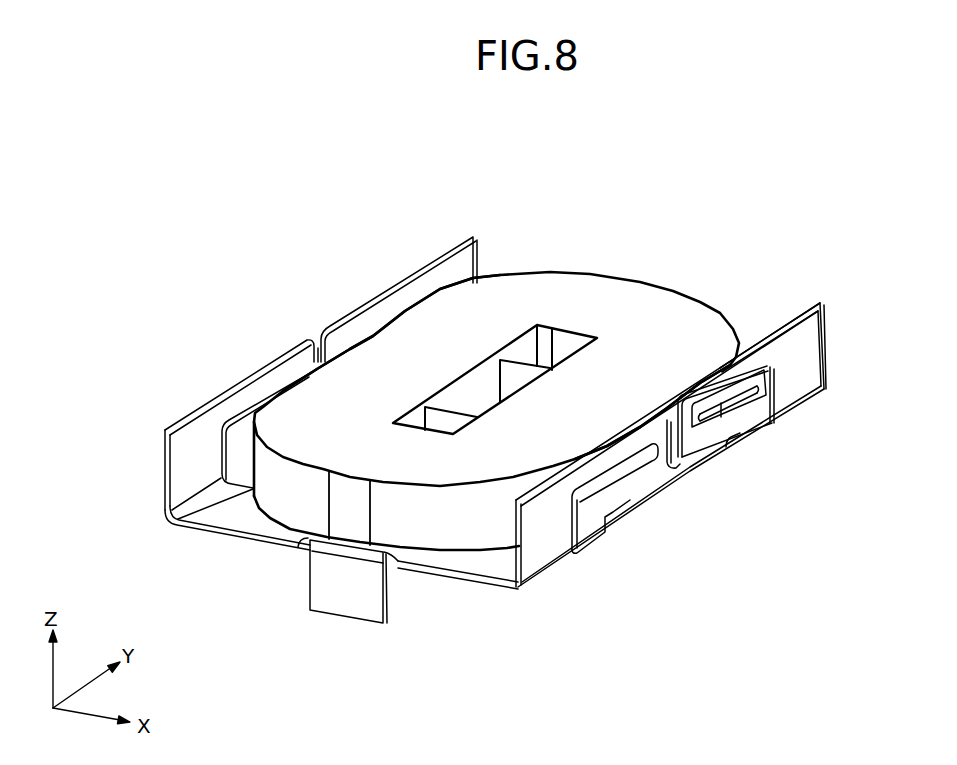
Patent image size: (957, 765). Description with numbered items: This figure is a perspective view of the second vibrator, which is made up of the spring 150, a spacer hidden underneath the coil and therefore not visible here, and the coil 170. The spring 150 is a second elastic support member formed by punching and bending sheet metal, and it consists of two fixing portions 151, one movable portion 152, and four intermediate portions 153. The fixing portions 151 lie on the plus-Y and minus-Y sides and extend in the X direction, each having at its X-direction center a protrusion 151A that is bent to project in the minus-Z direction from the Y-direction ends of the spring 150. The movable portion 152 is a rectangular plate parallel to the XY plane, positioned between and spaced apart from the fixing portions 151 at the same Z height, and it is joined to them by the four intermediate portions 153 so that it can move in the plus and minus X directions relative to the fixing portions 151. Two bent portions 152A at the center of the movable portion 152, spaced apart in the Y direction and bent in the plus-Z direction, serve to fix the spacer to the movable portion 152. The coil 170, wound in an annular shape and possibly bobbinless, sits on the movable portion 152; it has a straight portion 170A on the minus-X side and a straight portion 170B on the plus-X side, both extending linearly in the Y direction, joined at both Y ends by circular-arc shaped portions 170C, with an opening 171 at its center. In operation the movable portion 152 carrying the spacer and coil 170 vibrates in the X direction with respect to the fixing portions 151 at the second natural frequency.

The spring 150 is at (827, 343).
The fixing portion 151 is at (480, 567).
The protrusion 151A is at (343, 600).
The movable portion 152 is at (677, 467).
The bent portion 152A is at (510, 378).
The intermediate portion 153 is at (807, 360).
The coil 170 is at (267, 430).
The straight portion 170A is at (395, 357).
The straight portion 170B is at (607, 413).
The circular-arc shaped portion 170C is at (622, 302).
The opening 171 is at (568, 347).